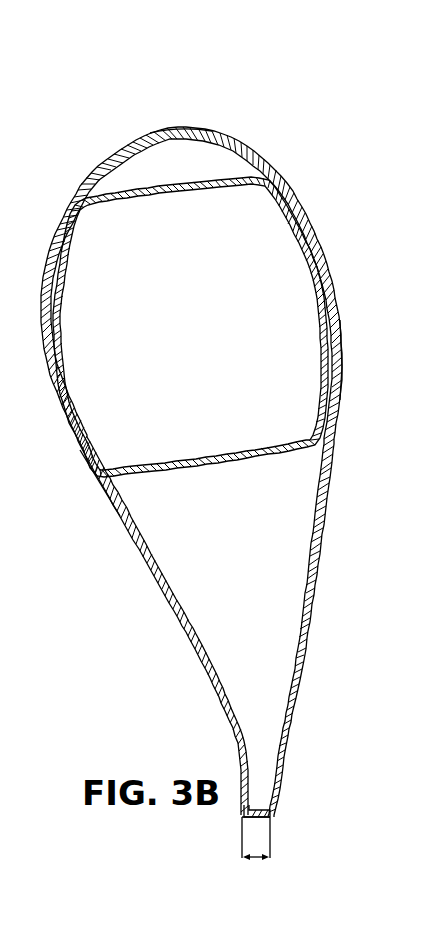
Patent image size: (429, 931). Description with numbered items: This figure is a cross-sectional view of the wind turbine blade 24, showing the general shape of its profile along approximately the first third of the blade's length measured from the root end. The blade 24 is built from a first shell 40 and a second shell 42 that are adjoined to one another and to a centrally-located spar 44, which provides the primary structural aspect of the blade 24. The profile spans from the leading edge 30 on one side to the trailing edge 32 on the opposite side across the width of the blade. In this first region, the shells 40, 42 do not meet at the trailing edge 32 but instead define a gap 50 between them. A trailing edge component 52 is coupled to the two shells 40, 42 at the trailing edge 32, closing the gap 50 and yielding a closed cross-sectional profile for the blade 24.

The blade 24 is at (161, 128).
The leading edge 30 is at (186, 126).
The first shell 40 is at (343, 343).
The second shell 42 is at (93, 483).
The spar 44 is at (194, 190).
The trailing edge component 52 is at (260, 814).
The trailing edge 32 is at (272, 818).
The gap 50 is at (258, 857).